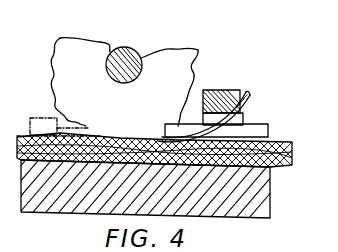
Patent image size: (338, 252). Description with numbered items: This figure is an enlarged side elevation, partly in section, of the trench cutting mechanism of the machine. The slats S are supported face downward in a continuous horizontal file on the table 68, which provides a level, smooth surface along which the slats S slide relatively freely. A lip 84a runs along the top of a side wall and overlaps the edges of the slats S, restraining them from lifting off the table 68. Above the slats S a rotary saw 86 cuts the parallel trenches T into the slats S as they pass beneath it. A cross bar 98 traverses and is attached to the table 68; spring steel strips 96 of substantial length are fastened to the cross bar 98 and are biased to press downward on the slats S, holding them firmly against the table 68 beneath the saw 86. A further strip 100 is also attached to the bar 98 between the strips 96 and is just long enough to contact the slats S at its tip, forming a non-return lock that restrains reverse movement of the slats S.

The table 68 is at (276, 195).
The slats S is at (138, 163).
The lip 84a is at (270, 130).
The further strip 100 is at (247, 124).
The cross bar 98 is at (246, 90).
The rotary saws 86 is at (198, 52).
The spring steel strips 96 is at (53, 108).
The trenches T is at (18, 137).